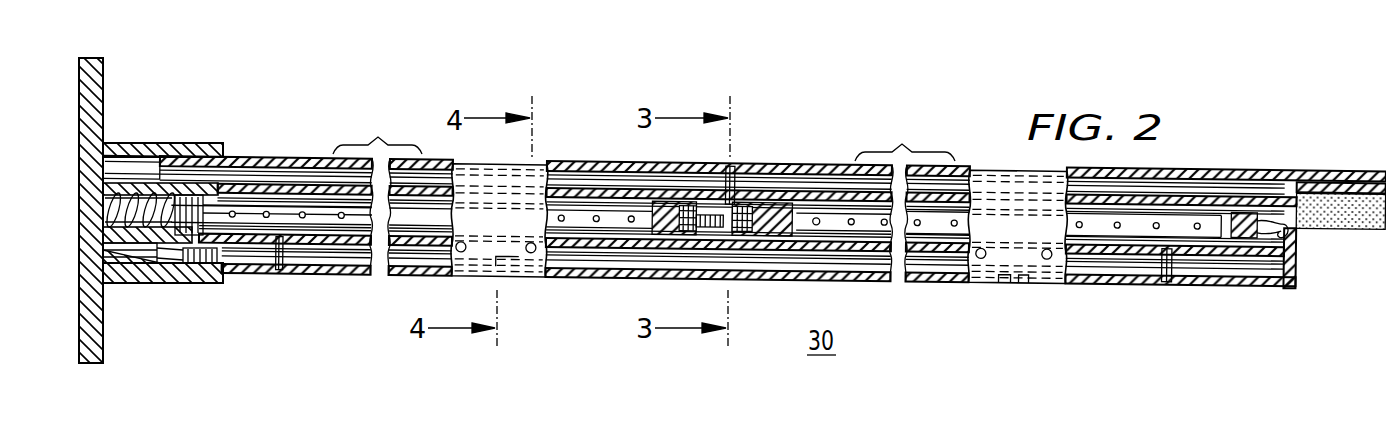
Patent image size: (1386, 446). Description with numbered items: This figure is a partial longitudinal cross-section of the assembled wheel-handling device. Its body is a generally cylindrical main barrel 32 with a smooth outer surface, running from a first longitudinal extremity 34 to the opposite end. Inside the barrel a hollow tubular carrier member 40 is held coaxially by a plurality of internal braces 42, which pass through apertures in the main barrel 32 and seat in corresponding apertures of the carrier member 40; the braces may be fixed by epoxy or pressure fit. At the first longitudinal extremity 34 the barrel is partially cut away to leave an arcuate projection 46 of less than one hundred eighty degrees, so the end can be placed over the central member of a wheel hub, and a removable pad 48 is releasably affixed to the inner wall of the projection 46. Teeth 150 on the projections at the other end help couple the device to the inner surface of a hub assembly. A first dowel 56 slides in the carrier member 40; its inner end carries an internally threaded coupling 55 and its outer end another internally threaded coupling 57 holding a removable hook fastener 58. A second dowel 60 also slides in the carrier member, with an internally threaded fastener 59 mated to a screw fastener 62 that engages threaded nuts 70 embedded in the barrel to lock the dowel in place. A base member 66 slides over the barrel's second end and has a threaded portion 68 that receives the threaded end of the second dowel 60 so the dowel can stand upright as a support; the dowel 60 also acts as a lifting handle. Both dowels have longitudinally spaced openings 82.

The main barrel 32 is at (976, 148).
The first longitudinal extremity 34 is at (1327, 144).
The hollow tubular carrier member 40 is at (951, 247).
The internal braces 42 is at (268, 266).
The projection 46 is at (1342, 170).
The removable pad 48 is at (1375, 264).
The internally threaded coupling 55 is at (733, 254).
The first dowel 56 is at (1183, 220).
The internally threaded coupling 57 is at (1235, 207).
The hook fastener 58 is at (1268, 240).
The internally threaded fastener 59 is at (687, 207).
The second dowel 60 is at (252, 213).
The screw fastener 62 is at (710, 223).
The base member 66 is at (115, 61).
The threaded portion 68 is at (159, 276).
The threaded nuts 70 is at (498, 275).
The openings 82 is at (818, 221).
The teeth 150 is at (147, 277).